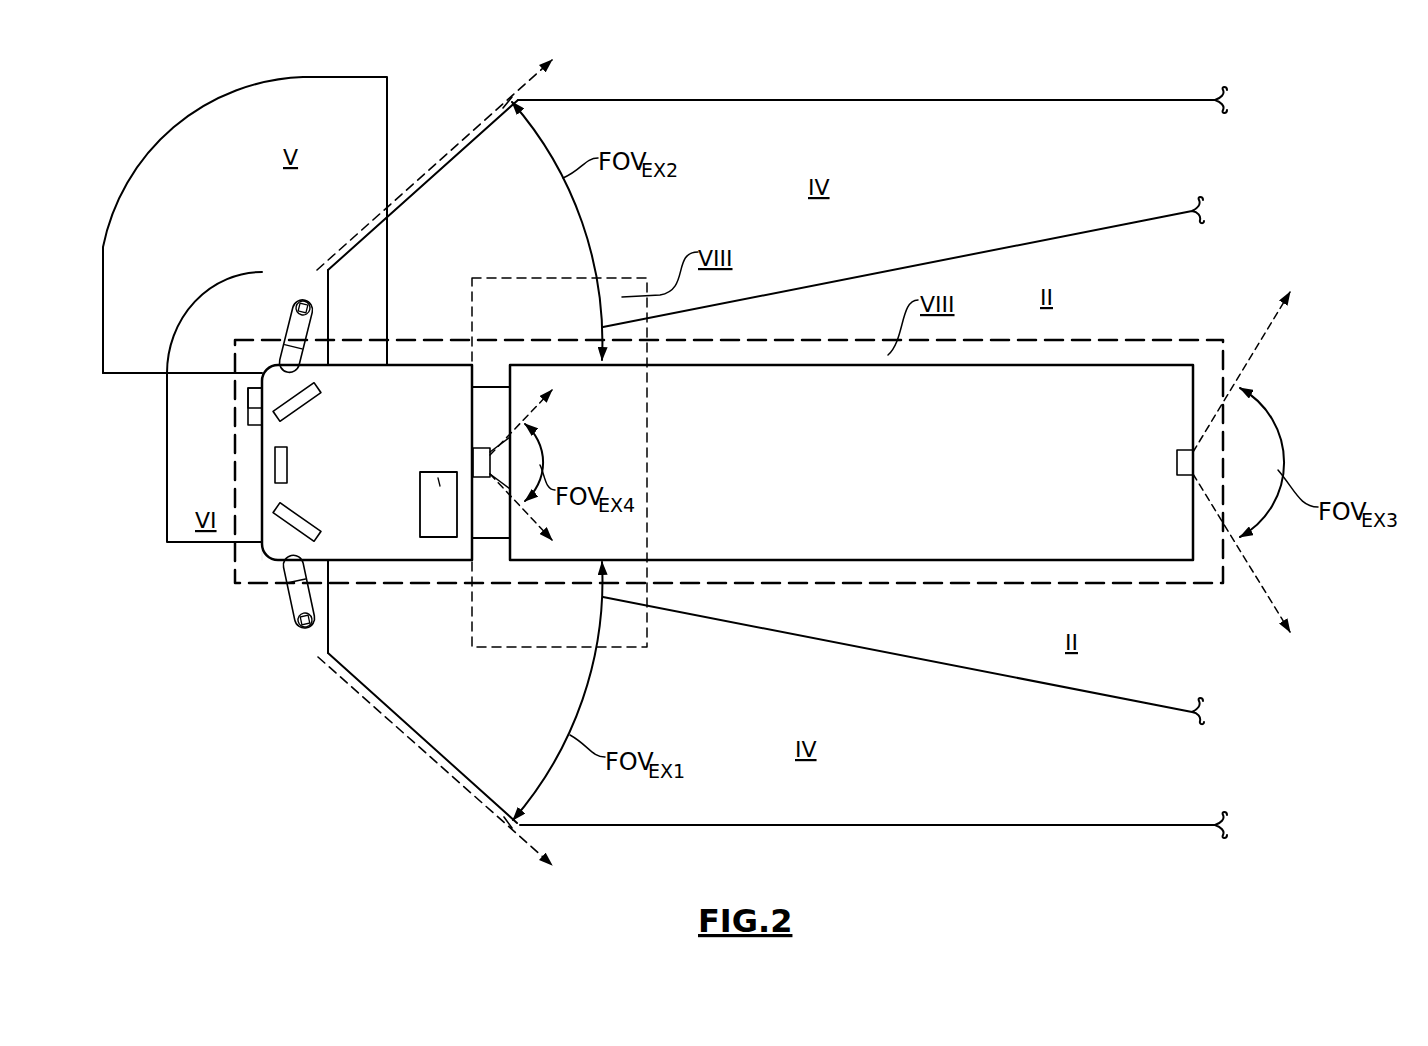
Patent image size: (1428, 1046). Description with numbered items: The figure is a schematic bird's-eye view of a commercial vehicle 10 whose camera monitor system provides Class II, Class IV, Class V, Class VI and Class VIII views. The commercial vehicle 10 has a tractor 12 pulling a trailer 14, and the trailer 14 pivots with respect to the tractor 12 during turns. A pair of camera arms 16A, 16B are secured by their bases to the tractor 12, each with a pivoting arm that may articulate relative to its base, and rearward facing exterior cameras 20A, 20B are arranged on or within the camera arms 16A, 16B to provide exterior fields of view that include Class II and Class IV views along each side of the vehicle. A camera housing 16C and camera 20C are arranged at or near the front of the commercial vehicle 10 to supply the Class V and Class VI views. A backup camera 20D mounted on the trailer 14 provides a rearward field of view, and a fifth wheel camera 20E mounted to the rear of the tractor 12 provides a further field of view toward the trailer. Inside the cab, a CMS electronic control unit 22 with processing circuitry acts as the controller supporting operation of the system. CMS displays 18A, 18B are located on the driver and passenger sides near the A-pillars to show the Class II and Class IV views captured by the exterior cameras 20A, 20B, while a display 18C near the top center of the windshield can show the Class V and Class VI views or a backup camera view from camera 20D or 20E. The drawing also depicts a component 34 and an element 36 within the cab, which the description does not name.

The commercial vehicle 10 is at (234, 355).
The tractor 12 is at (255, 555).
The trailer 14 is at (1104, 356).
The camera arm 16A is at (293, 603).
The camera arm 16B is at (283, 318).
The camera housing 16C is at (248, 408).
The CMS display 18A is at (308, 512).
The CMS display 18B is at (308, 403).
The display 18C is at (275, 457).
The exterior camera 20A is at (312, 617).
The exterior camera 20B is at (313, 310).
The camera 20C is at (248, 396).
The backup camera 20D is at (1177, 462).
The fifth wheel camera 20E is at (483, 448).
The CMS electronic control unit 22 is at (413, 365).
The display 34 is at (408, 497).
The display screen 36 is at (440, 484).